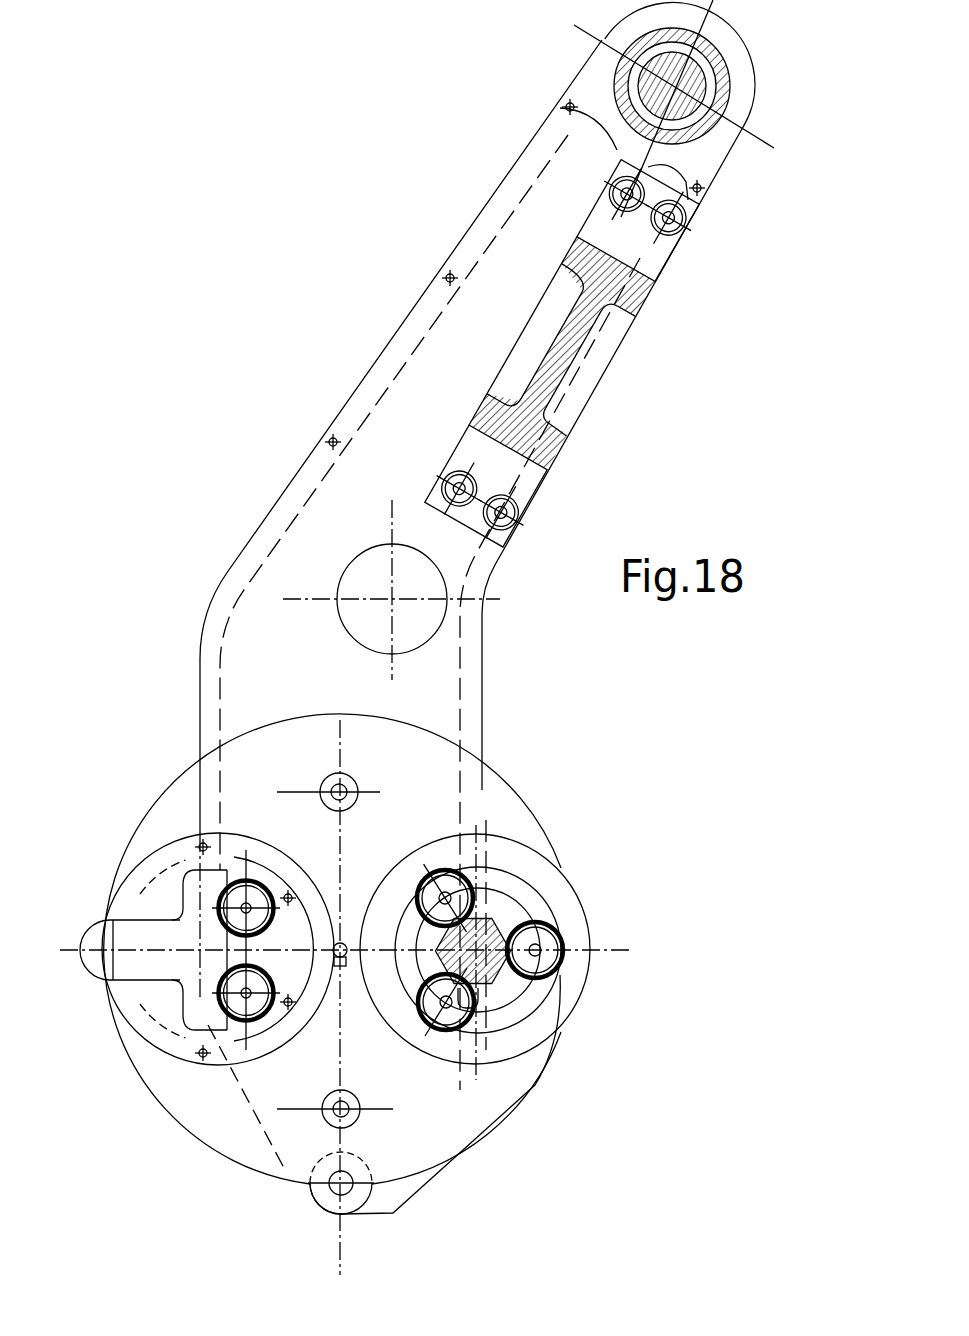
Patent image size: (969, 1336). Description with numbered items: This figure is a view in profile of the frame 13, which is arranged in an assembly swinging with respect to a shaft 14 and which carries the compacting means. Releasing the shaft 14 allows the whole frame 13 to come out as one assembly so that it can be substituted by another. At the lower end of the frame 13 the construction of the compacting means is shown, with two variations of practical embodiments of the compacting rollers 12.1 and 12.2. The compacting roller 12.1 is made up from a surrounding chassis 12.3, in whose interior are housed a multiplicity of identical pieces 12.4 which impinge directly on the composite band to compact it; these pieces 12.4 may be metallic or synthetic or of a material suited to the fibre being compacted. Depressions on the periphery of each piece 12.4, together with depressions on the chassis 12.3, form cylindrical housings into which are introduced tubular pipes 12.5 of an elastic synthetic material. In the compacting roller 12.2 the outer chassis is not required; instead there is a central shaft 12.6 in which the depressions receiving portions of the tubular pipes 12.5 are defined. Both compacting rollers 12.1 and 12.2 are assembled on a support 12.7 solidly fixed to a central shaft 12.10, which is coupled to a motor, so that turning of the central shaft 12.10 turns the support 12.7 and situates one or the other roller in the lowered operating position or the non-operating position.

The frame 13 is at (415, 383).
The shaft 14 is at (687, 78).
The compacting roller 12.1 is at (122, 854).
The compacting roller 12.2 is at (588, 866).
The surrounding chassis 12.3 is at (153, 1037).
The identical pieces 12.4 is at (100, 938).
The tubular pipes 12.5 is at (253, 878).
The central shaft 12.6 is at (493, 975).
The support 12.7 is at (176, 800).
The central shaft 12.10 is at (345, 962).